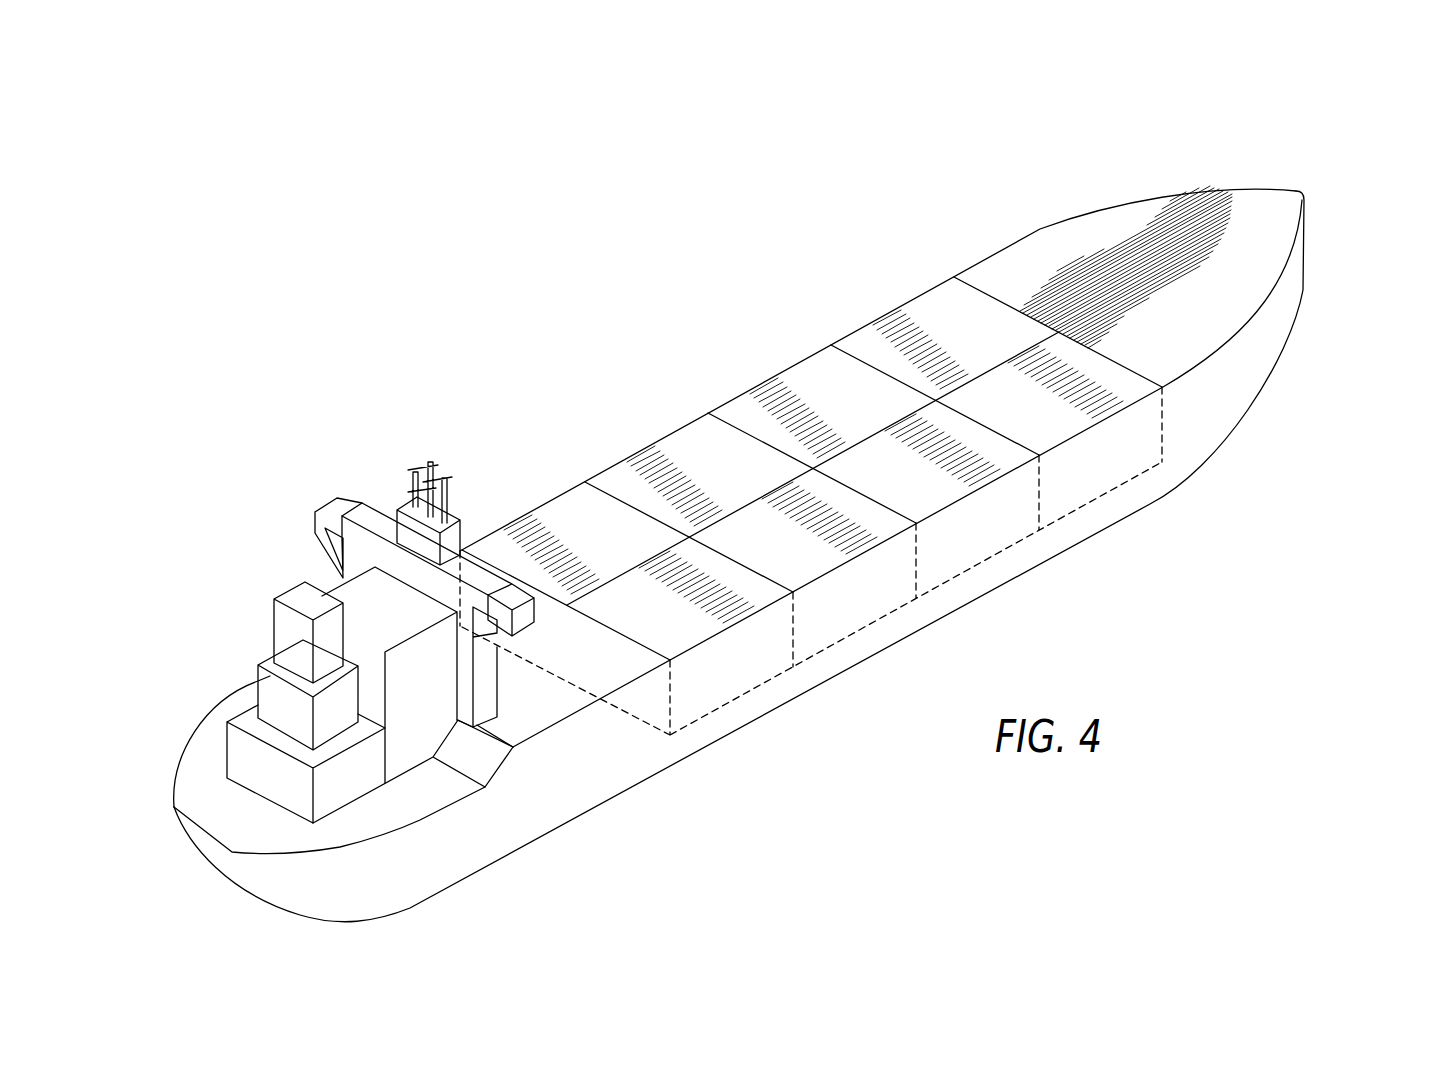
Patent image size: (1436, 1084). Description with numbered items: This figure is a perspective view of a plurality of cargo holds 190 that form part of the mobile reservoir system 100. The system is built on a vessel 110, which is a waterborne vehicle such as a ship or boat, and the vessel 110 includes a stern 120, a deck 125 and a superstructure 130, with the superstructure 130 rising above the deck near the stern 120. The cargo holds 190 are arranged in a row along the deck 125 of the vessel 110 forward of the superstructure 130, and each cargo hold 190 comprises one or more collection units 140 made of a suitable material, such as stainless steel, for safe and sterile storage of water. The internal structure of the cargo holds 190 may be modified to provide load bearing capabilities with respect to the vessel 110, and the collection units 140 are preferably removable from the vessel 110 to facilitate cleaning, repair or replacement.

The mobile reservoir system 100 is at (1324, 172).
The vessel 110 is at (1228, 398).
The stern 120 is at (243, 597).
The deck 125 is at (1102, 246).
The superstructure 130 is at (398, 506).
The collection unit 140 is at (940, 277).
The cargo hold 190 is at (668, 567).